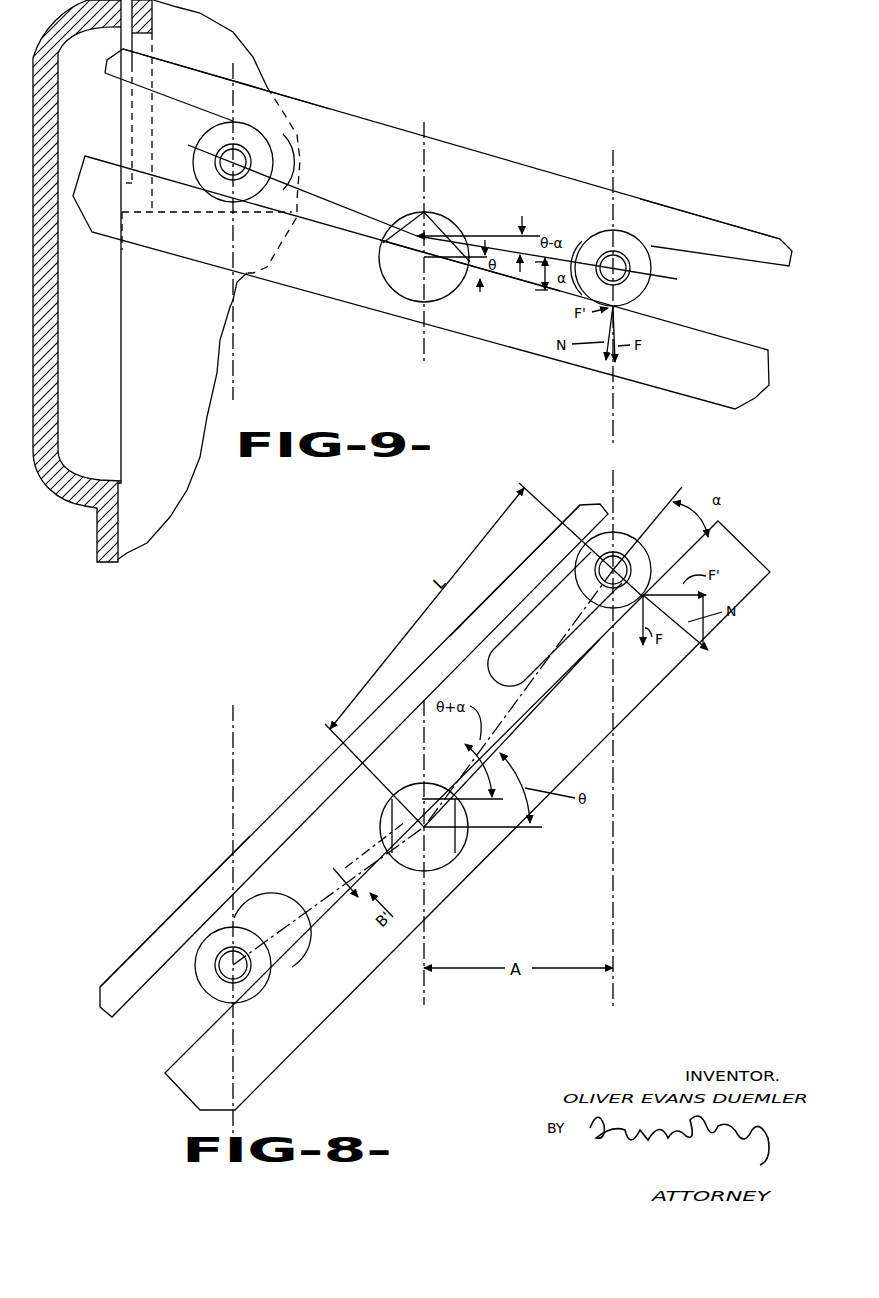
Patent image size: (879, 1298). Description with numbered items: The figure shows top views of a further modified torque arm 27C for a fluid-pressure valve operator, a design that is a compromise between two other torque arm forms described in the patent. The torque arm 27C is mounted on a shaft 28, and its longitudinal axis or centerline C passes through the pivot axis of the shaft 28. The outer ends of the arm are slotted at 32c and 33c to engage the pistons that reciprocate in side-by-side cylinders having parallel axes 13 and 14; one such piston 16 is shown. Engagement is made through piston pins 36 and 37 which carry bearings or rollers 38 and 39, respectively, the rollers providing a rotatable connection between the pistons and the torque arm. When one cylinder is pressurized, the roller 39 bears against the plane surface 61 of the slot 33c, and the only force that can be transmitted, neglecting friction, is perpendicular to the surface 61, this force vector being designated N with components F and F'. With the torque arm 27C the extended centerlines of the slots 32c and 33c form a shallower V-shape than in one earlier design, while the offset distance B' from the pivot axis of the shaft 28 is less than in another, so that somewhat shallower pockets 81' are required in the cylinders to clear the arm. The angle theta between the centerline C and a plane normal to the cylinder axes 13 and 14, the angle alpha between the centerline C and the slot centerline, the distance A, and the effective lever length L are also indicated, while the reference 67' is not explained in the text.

In FIG. 9, the cylinder axis 13 is at (236, 348).
In FIG. 8, the cylinder axis 13 is at (236, 758).
In FIG. 9, the cylinder axis 14 is at (610, 403).
In FIG. 8, the cylinder axis 14 is at (618, 797).
In FIG. 9, the piston 16 is at (234, 31).
In FIG. 9, the torque arm 27C is at (384, 121).
In FIG. 8, the torque arm 27C is at (286, 808).
In FIG. 9, the shaft 28 is at (402, 270).
In FIG. 8, the shaft 28 is at (438, 860).
In FIG. 9, the slot 32c is at (185, 98).
In FIG. 8, the slot 32c is at (150, 977).
In FIG. 9, the slot 33c is at (708, 249).
In FIG. 8, the slot 33c is at (547, 583).
In FIG. 9, the piston pin 36 is at (240, 162).
In FIG. 8, the piston pin 36 is at (226, 984).
In FIG. 9, the piston pin 37 is at (624, 268).
In FIG. 8, the piston pin 37 is at (618, 562).
In FIG. 9, the roller 38 is at (255, 145).
In FIG. 8, the roller 38 is at (243, 928).
In FIG. 9, the roller 39 is at (627, 250).
In FIG. 8, the roller 39 is at (591, 582).
In FIG. 9, the plane surface 61 is at (107, 160).
In FIG. 8, the plane surface 61 is at (190, 1048).
In FIG. 9, the slot 67' is at (95, 239).
In FIG. 9, the pocket 81' is at (162, 281).
In FIG. 9, the torque arm centerline C is at (372, 238).
In FIG. 8, the torque arm centerline C is at (517, 748).